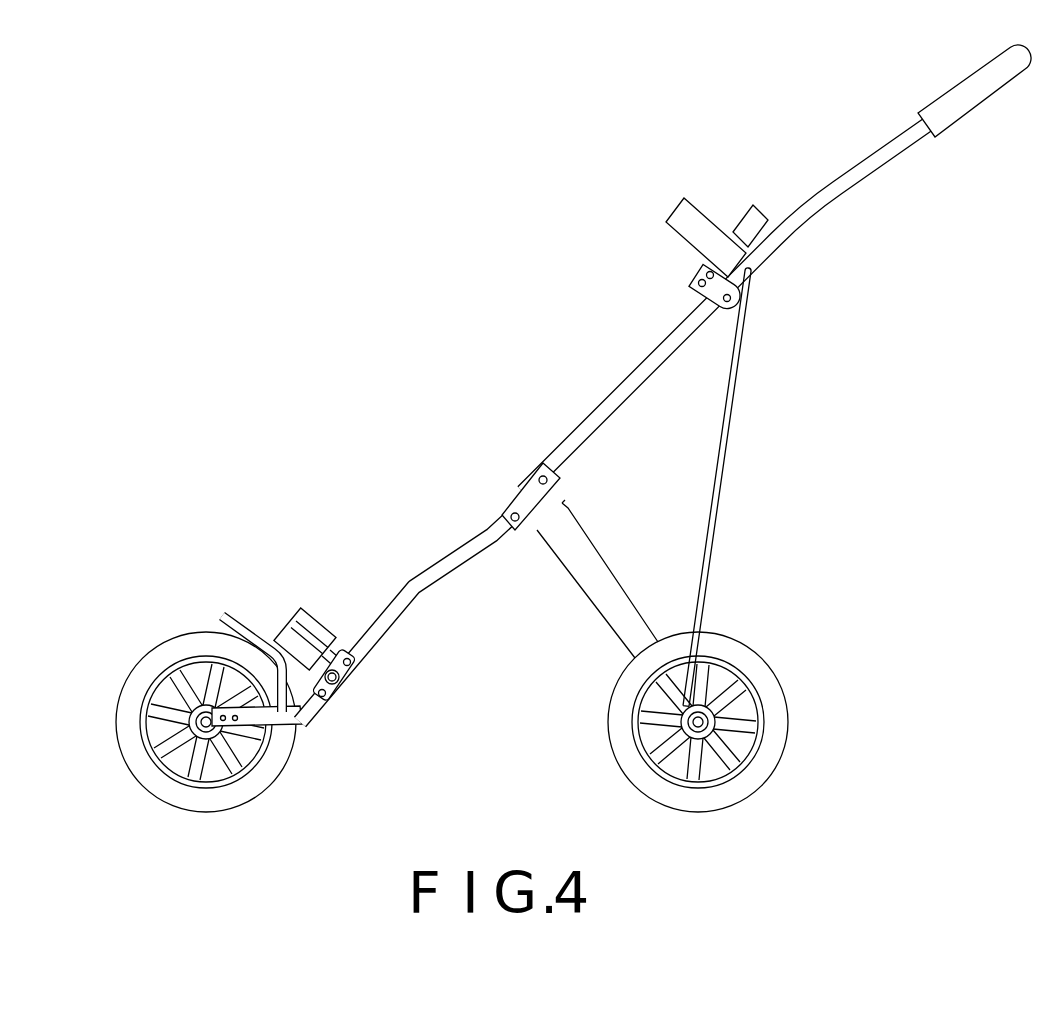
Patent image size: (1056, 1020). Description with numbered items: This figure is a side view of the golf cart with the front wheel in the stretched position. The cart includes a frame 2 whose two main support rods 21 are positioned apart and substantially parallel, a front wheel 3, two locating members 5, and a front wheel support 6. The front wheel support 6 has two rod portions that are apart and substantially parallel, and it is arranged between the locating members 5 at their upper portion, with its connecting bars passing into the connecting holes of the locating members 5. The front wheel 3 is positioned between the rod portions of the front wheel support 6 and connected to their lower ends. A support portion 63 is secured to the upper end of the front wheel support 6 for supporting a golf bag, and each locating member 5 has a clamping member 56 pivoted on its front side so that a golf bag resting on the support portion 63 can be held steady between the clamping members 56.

The frame 2 is at (625, 356).
The main support rods 21 is at (592, 408).
The front wheel 3 is at (122, 700).
The locating members 5 is at (351, 680).
The clamping member 56 is at (292, 615).
The front wheel support 6 is at (283, 747).
The support portion 63 is at (243, 620).